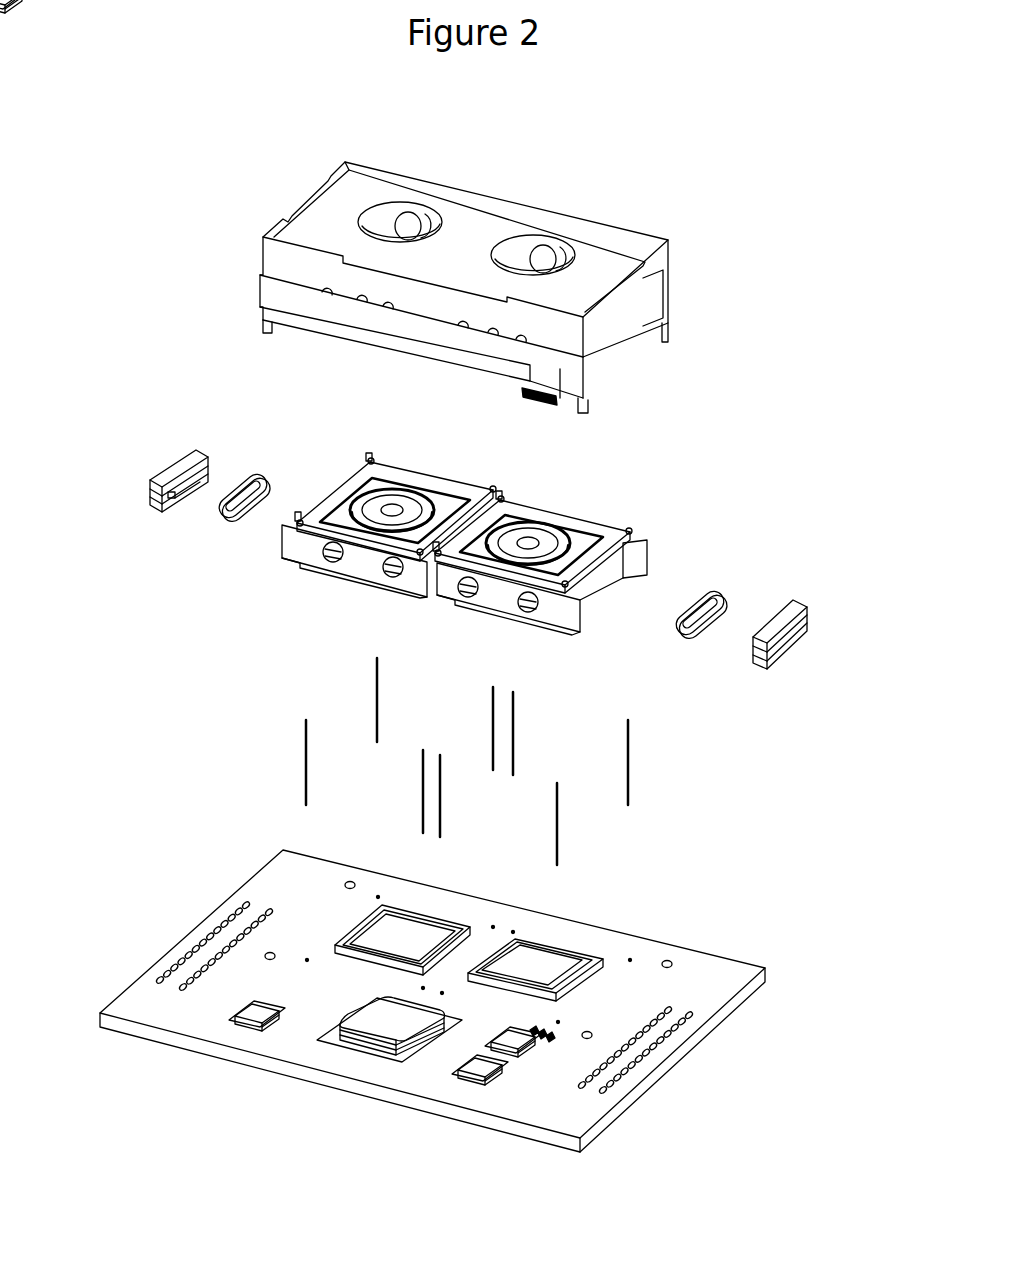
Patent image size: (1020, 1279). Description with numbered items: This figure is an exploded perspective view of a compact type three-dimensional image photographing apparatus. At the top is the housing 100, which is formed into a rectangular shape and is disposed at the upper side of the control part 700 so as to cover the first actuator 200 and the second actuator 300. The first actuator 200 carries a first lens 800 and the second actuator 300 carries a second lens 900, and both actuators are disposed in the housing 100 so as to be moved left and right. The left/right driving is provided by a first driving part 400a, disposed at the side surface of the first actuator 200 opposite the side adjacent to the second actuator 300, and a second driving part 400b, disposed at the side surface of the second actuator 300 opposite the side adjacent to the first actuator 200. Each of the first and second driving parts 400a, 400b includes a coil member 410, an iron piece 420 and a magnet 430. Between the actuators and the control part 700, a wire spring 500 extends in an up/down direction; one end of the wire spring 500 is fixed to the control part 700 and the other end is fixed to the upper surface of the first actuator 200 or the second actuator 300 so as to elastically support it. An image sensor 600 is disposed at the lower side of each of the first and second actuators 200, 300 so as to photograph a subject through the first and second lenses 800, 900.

The housing 100 is at (513, 220).
The first actuator 200 is at (331, 558).
The second actuator 300 is at (590, 512).
The first driving part 400a is at (170, 416).
The second driving part 400b is at (794, 546).
The coil member 410 is at (247, 480).
The iron piece 420 is at (182, 495).
The magnet 430 is at (187, 458).
The wire spring 500 is at (557, 803).
The image sensor 600 is at (540, 967).
The control part 700 is at (427, 576).
The first lens 800 is at (413, 503).
The second lens 900 is at (528, 533).